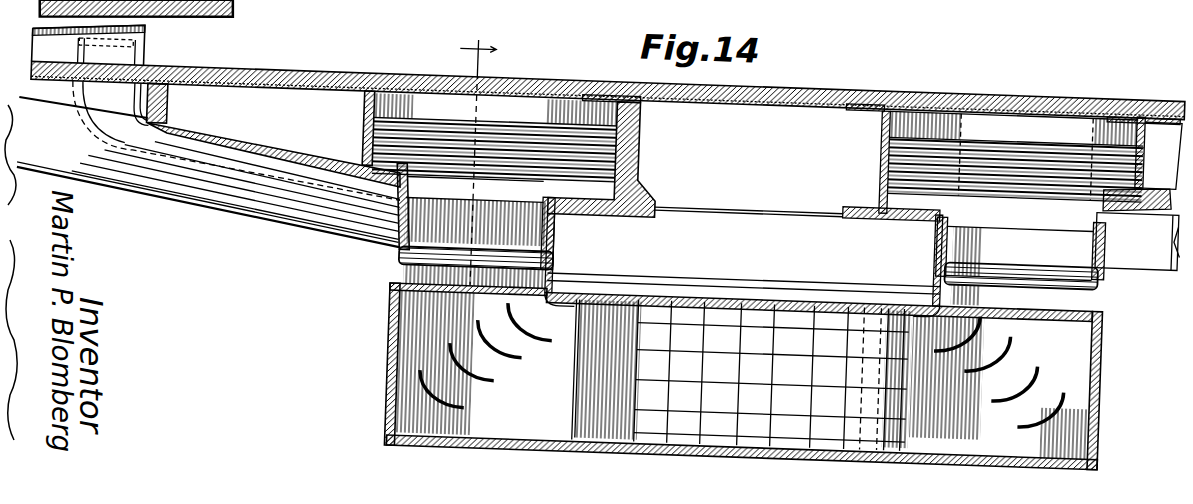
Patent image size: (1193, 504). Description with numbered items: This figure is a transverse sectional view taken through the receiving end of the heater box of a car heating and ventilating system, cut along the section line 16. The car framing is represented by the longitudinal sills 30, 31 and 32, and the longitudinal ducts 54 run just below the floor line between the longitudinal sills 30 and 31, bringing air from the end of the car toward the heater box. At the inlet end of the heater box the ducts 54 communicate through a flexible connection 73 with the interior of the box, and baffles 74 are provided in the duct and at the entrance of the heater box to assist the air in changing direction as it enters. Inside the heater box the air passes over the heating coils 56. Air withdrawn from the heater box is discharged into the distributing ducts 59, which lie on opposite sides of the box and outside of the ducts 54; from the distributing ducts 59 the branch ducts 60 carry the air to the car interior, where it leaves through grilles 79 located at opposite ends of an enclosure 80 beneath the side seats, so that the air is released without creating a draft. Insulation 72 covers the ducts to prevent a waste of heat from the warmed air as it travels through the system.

The section line / vent opening 16 is at (440, 311).
The longitudinal sill 30 is at (634, 113).
The longitudinal sill 31 is at (358, 112).
The longitudinal sill 32 is at (161, 106).
The longitudinal duct 54 is at (758, 147).
The heating coil 56 is at (724, 412).
The distributing duct 59 is at (664, 150).
The branch duct 60 is at (125, 53).
The insulation 72 is at (1122, 226).
The flexible connection 73 is at (553, 254).
The baffle 74 is at (480, 186).
The grille 79 is at (137, 38).
The enclosure 80 is at (158, 79).